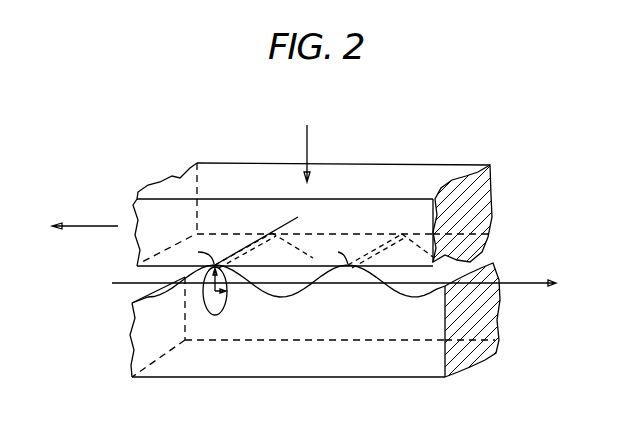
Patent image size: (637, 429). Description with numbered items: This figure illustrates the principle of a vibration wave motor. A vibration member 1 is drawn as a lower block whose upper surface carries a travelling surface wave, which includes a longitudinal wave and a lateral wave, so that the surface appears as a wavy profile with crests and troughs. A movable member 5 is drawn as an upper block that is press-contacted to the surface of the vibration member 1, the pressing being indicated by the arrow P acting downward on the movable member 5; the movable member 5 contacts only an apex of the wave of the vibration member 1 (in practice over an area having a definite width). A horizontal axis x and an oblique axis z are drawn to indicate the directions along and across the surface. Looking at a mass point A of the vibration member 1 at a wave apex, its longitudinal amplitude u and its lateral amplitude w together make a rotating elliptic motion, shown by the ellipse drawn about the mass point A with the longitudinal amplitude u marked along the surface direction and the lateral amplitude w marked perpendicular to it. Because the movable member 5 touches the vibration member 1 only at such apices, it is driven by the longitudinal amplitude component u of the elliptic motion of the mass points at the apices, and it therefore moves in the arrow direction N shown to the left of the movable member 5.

The movable member 5 is at (398, 168).
The vibration member 1 is at (367, 367).
The pressing load P is at (299, 153).
The arrow direction N is at (85, 214).
The x axis x is at (343, 283).
The z axis z is at (261, 235).
The mass point A is at (264, 253).
The lateral amplitude w is at (206, 276).
The longitudinal amplitude u is at (218, 293).